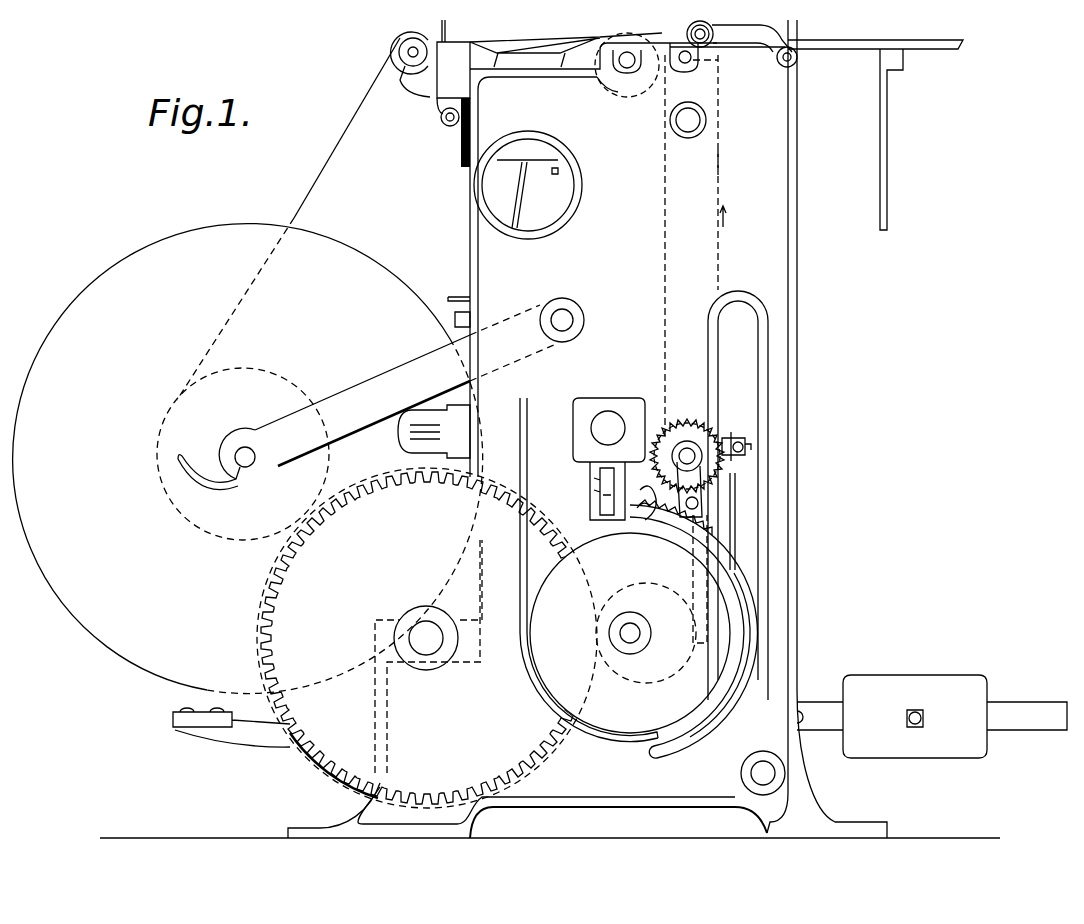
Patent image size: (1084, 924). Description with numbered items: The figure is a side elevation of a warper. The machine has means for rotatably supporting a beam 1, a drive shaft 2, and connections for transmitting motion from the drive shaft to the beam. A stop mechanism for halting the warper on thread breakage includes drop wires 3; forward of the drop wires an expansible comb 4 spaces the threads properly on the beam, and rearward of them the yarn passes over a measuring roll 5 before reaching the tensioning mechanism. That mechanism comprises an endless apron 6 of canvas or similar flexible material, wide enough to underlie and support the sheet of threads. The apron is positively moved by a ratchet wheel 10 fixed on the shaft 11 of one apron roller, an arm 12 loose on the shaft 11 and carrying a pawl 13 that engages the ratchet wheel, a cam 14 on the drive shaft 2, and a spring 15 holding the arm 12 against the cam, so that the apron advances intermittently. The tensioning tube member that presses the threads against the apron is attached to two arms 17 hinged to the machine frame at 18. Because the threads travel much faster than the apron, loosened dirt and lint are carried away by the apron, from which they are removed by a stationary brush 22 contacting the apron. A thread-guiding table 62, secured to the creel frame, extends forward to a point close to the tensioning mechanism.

The beam 1 is at (248, 459).
The drive shaft 2 is at (627, 633).
The drop wires 3 is at (578, 62).
The expansible comb 4 is at (440, 22).
The measuring roll 5 is at (600, 80).
The endless apron 6 is at (718, 165).
The ratchet wheel 10 is at (680, 430).
The shaft 11 is at (692, 453).
The arm 12 is at (700, 565).
The pawl 13 is at (710, 498).
The cam 14 is at (652, 685).
The spring 15 is at (644, 495).
The arms 17 is at (750, 38).
The hinge 18 is at (798, 59).
The stationary brush 22 is at (733, 433).
The table 62 is at (930, 49).